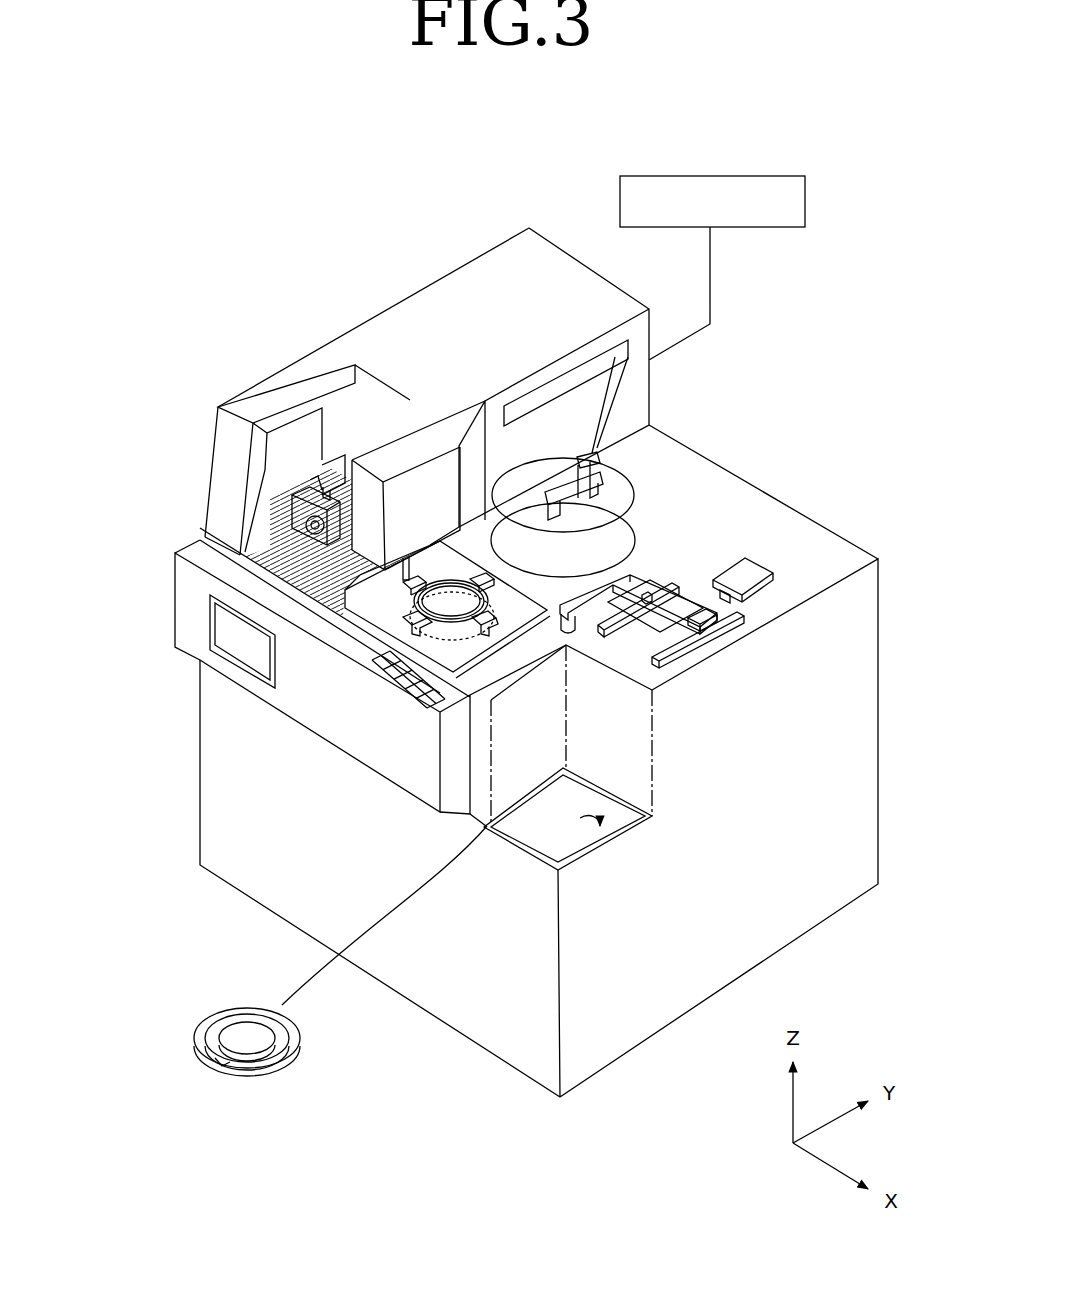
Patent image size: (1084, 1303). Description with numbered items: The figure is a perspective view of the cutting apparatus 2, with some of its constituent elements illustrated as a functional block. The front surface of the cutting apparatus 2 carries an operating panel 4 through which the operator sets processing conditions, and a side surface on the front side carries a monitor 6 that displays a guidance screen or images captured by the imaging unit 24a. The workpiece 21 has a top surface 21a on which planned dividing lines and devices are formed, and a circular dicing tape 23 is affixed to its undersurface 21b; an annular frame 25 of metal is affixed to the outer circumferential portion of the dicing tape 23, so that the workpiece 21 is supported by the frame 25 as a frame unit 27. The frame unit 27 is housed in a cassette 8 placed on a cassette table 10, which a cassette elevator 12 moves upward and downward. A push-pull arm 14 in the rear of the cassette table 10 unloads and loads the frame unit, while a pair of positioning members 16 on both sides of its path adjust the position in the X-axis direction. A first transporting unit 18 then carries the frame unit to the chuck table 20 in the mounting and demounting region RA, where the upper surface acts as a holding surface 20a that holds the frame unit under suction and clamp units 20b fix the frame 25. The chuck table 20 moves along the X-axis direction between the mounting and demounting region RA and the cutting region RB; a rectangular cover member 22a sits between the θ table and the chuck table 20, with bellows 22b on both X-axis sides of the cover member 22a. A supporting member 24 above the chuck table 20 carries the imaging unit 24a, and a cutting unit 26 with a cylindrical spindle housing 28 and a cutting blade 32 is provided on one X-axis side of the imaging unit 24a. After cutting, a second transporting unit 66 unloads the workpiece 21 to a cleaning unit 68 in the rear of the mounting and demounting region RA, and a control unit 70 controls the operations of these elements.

The cutting apparatus 2 is at (326, 250).
The operating panel 4 is at (417, 668).
The monitor 6 is at (226, 668).
The cassette 8 is at (637, 767).
The cassette table 10 is at (607, 843).
The cassette elevator 12 is at (593, 843).
The push-pull arm 14 is at (750, 570).
The positioning members 16 is at (722, 630).
The first transporting unit 18 is at (637, 568).
The chuck table 20 is at (427, 647).
The holding surface 20a is at (437, 600).
The clamp units 20b is at (489, 578).
The workpiece 21 is at (280, 1034).
The top surface 21a is at (250, 1027).
The undersurface 21b is at (255, 1067).
The cover member 22a is at (445, 655).
The bellows 22b is at (268, 532).
The dicing tape 23 is at (215, 1062).
The supporting member 24 is at (388, 462).
The imaging unit 24a is at (409, 556).
The annular frame 25 is at (203, 1027).
The cutting unit 26 is at (313, 472).
The frame unit 27 is at (295, 1061).
The spindle housing 28 is at (345, 483).
The cutting blade 32 is at (290, 492).
The second transporting unit 66 is at (609, 412).
The cleaning unit 68 is at (589, 563).
The control unit 70 is at (708, 176).
The mounting and demounting region RA is at (388, 655).
The cutting region RB is at (261, 578).